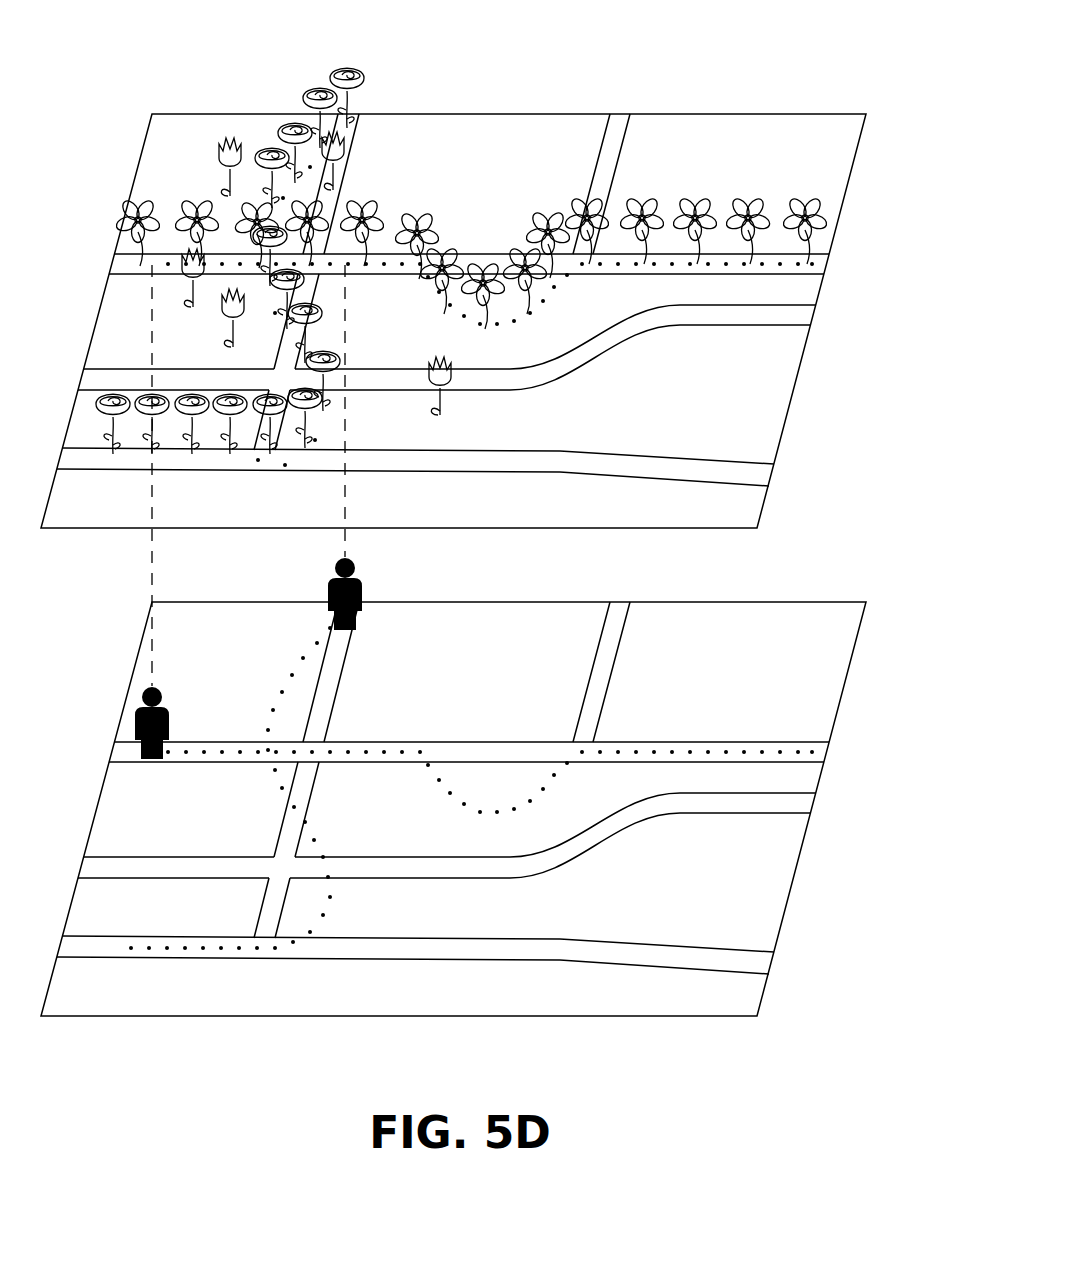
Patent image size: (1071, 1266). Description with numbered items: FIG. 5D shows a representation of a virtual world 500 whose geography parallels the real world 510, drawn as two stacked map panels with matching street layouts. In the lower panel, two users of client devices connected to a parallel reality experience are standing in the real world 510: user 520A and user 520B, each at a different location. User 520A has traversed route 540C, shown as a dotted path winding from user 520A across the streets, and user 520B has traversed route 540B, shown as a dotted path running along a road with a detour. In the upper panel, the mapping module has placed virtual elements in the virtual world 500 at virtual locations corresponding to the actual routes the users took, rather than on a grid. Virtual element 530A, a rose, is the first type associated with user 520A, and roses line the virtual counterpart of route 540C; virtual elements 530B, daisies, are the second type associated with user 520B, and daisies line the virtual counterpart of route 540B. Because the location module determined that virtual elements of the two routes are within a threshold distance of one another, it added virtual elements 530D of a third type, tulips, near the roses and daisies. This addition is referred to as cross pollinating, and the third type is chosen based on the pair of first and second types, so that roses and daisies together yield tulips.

The virtual world 500 is at (803, 365).
The real world 510 is at (808, 855).
The user 520A is at (390, 447).
The user 520B is at (152, 544).
The virtual element of the first type 530A is at (294, 132).
The virtual elements of the second type 530B is at (633, 197).
The virtual elements of the third type 530D is at (182, 200).
The route 540B is at (810, 750).
The route 540C is at (306, 650).